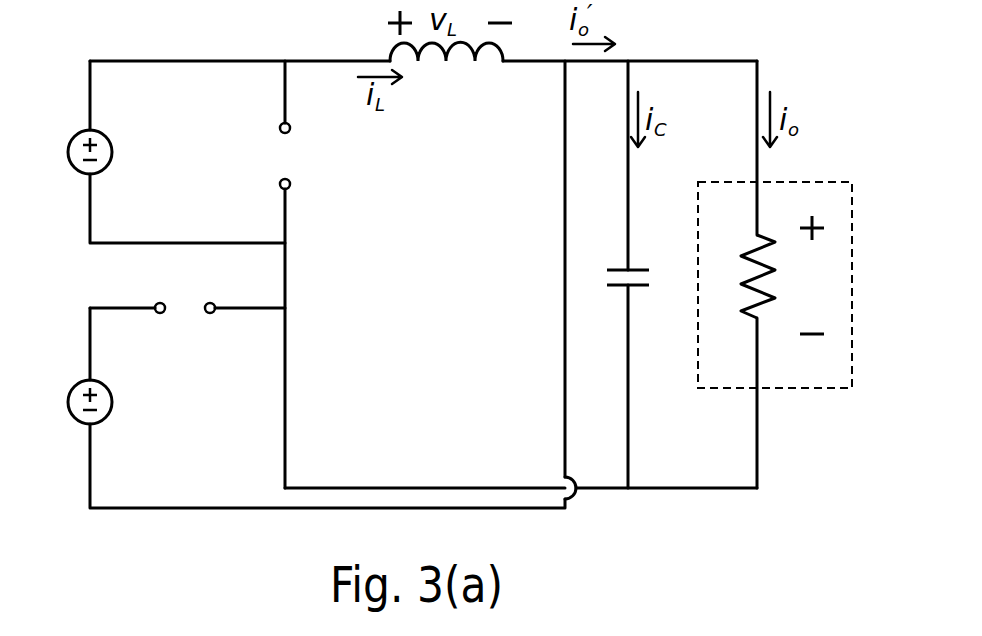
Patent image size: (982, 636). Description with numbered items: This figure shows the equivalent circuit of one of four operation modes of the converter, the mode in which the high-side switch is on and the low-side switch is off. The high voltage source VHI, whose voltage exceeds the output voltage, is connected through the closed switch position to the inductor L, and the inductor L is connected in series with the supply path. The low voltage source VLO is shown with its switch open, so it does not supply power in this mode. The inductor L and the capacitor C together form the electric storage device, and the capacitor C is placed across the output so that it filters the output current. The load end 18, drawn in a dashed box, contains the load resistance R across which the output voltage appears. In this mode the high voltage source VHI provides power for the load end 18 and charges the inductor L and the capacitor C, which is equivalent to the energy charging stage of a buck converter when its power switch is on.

The load end 18 is at (776, 335).
The inductor L is at (446, 71).
The capacitor C is at (638, 287).
The load resistor R is at (739, 276).
The high voltage source VHI is at (72, 157).
The low voltage source VLO is at (72, 407).